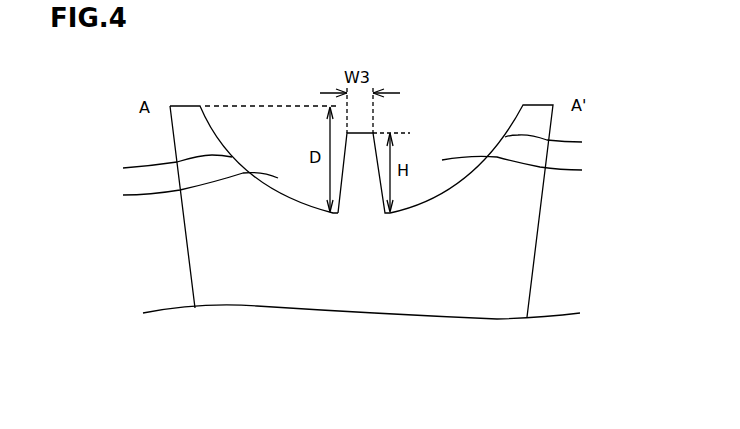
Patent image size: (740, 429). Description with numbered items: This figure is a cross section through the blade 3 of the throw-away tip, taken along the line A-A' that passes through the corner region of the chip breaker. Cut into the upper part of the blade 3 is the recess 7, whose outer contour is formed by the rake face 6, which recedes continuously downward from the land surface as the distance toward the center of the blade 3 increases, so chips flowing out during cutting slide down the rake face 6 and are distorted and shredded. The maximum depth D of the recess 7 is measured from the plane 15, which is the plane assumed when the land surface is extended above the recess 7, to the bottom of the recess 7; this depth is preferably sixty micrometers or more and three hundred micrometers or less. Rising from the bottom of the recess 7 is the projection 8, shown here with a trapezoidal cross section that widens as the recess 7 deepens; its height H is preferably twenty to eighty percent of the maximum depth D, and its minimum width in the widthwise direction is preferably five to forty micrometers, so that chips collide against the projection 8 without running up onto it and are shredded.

The blade 3 is at (530, 203).
The rake face 6 is at (354, 154).
The recess 7 is at (354, 180).
The projection 8 is at (360, 163).
The plane 15 is at (253, 106).